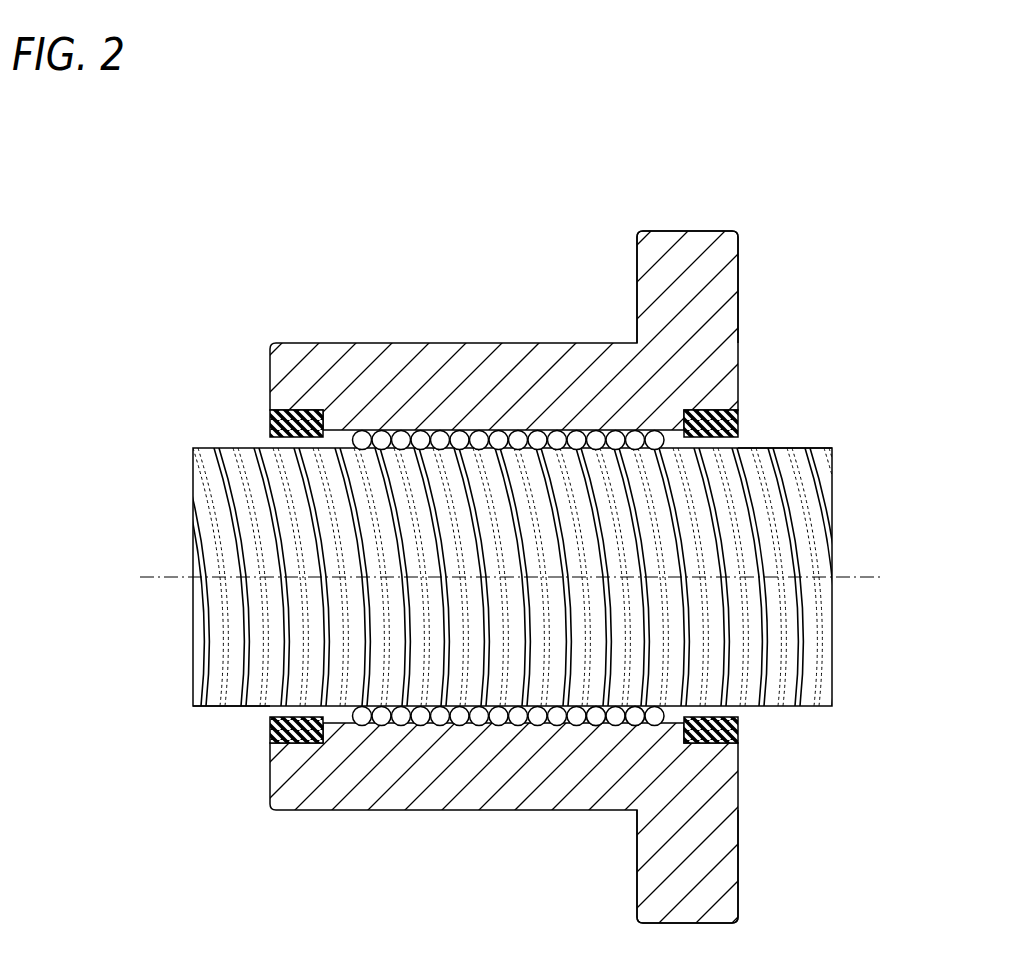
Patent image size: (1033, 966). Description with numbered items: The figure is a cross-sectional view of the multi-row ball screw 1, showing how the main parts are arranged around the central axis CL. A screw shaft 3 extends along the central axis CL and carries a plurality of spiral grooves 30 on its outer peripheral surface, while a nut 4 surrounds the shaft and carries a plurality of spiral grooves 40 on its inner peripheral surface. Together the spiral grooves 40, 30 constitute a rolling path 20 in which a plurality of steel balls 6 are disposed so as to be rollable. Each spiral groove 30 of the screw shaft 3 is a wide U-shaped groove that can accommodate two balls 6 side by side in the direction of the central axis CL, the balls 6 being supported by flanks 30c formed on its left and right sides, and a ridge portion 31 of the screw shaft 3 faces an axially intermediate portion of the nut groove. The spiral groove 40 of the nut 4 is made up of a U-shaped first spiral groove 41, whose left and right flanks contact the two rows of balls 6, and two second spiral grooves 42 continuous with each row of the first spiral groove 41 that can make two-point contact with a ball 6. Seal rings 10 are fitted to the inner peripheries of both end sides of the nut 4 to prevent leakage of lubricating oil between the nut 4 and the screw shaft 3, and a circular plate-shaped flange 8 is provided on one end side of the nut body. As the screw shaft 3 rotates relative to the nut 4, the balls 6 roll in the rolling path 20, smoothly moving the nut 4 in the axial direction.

The multi-row ball screw 1 is at (385, 185).
The screw shaft 3 is at (812, 703).
The nut 4 is at (396, 800).
The steel ball 6 is at (470, 728).
The flange 8 is at (686, 252).
The seal ring 10 is at (290, 425).
The rolling path 20 is at (490, 437).
The spiral groove 30 is at (752, 440).
The ridge portion 31 is at (248, 712).
The flank 30c is at (253, 714).
The spiral groove 40 is at (530, 874).
The first spiral groove 41 is at (606, 718).
The second spiral groove 42 is at (646, 718).
The central axis CL is at (160, 585).